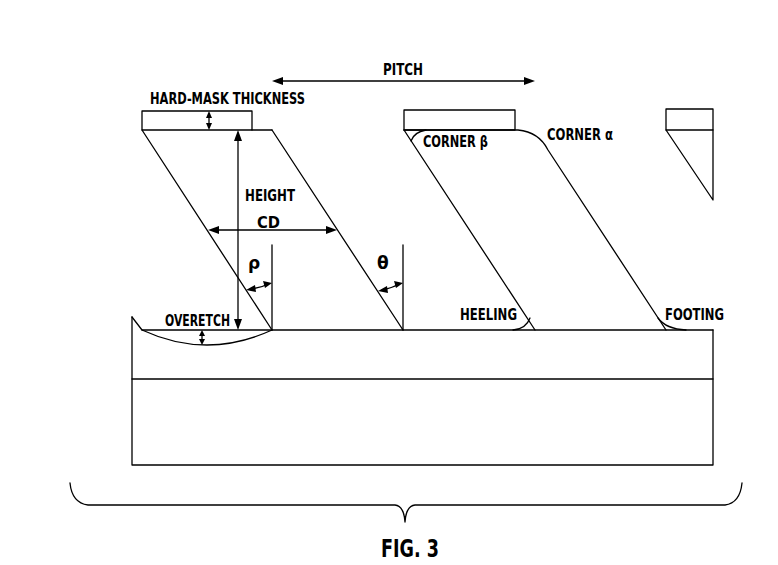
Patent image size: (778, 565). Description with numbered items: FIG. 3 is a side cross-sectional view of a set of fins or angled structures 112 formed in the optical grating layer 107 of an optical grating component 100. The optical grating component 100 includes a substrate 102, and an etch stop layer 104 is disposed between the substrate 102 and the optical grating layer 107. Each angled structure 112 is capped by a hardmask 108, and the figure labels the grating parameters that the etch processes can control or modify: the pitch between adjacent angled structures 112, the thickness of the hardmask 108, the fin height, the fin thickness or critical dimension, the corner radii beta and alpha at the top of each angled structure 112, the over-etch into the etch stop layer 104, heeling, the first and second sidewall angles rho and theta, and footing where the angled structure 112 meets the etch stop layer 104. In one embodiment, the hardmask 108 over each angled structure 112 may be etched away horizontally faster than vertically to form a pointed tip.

The optical grating component 100 is at (397, 245).
The substrate 102 is at (138, 410).
The etch stop layer 104 is at (702, 358).
The optical grating layer 107 is at (608, 251).
The hardmask 108 is at (155, 120).
The angled structures 112 is at (238, 183).